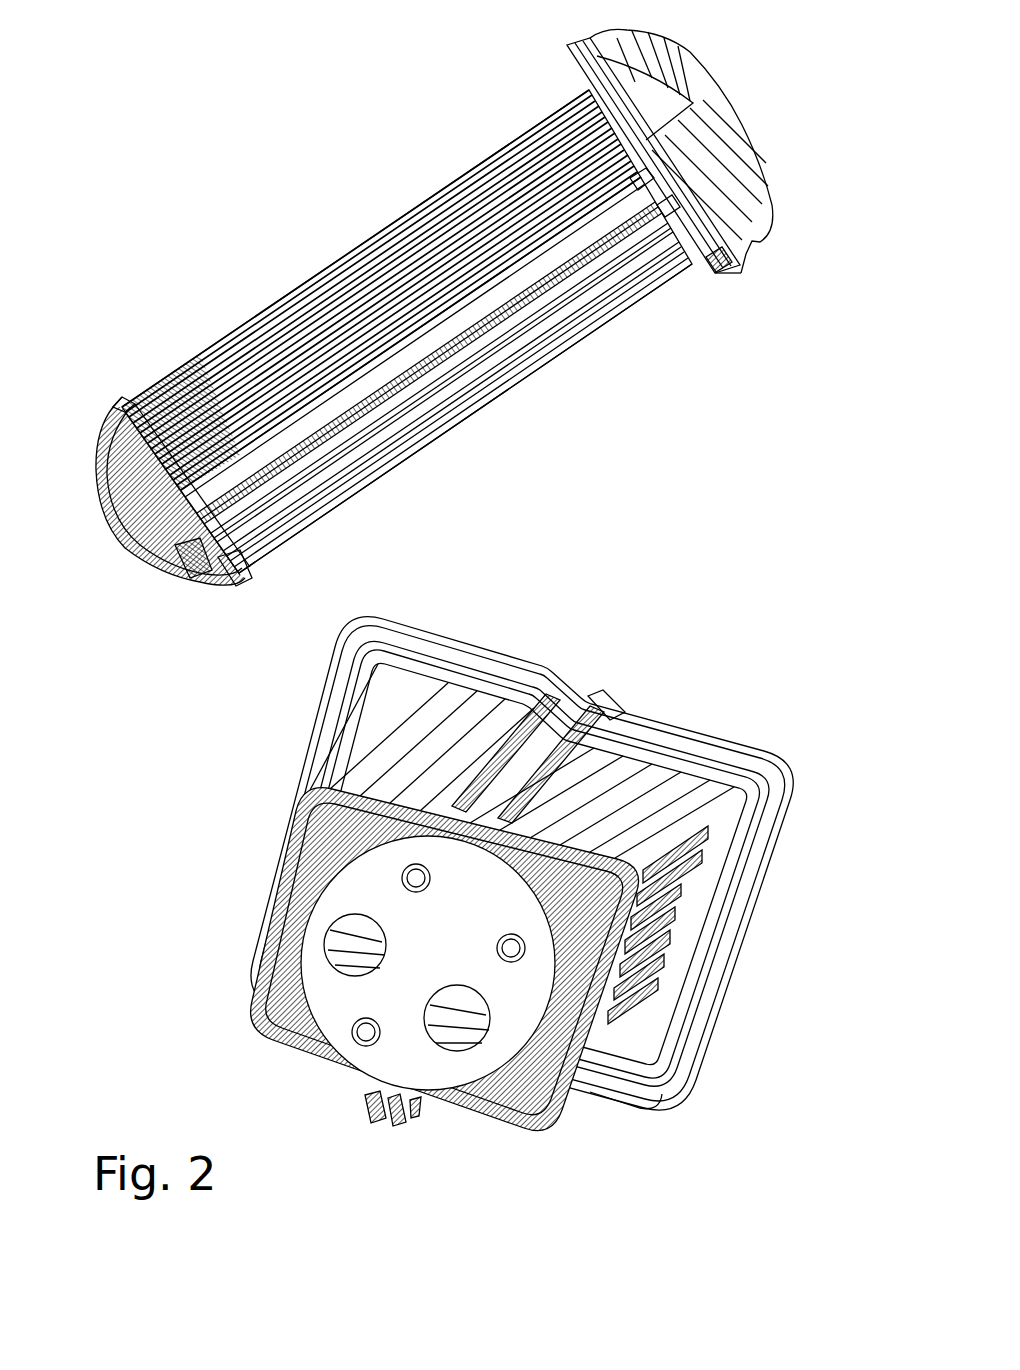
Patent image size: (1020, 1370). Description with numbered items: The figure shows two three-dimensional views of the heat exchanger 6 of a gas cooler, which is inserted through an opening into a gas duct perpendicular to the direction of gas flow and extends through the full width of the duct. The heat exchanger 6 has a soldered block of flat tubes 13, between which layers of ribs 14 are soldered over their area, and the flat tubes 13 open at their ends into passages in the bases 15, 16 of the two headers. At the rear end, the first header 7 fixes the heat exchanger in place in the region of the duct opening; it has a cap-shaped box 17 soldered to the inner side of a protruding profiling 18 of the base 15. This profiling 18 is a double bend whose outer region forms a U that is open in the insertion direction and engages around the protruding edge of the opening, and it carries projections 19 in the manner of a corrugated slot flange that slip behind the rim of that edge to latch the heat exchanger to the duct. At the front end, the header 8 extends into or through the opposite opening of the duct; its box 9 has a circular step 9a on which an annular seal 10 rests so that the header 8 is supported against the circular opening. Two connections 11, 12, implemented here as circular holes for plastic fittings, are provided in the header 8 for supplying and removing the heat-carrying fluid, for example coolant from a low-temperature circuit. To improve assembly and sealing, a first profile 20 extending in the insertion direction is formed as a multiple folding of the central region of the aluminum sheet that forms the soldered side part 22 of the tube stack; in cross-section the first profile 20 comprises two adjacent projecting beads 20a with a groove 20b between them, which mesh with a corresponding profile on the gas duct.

The heat exchanger 6 is at (348, 177).
The first header 7 is at (770, 272).
The header 8 is at (137, 582).
The box 9 is at (117, 530).
The step 9a is at (98, 453).
The annular seal 10 is at (180, 574).
The connection 11 is at (455, 1010).
The connection 12 is at (457, 1018).
The flat tubes 13 is at (327, 322).
The ribs 14 is at (168, 378).
The base 15 is at (723, 280).
The base 16 is at (238, 577).
The cap-shaped box 17 is at (737, 168).
The profiling 18 is at (677, 760).
The projections 19 is at (612, 1110).
The first profile 20 is at (482, 348).
The beads 20a is at (497, 760).
The groove 20b is at (525, 760).
The side part 22 is at (427, 415).